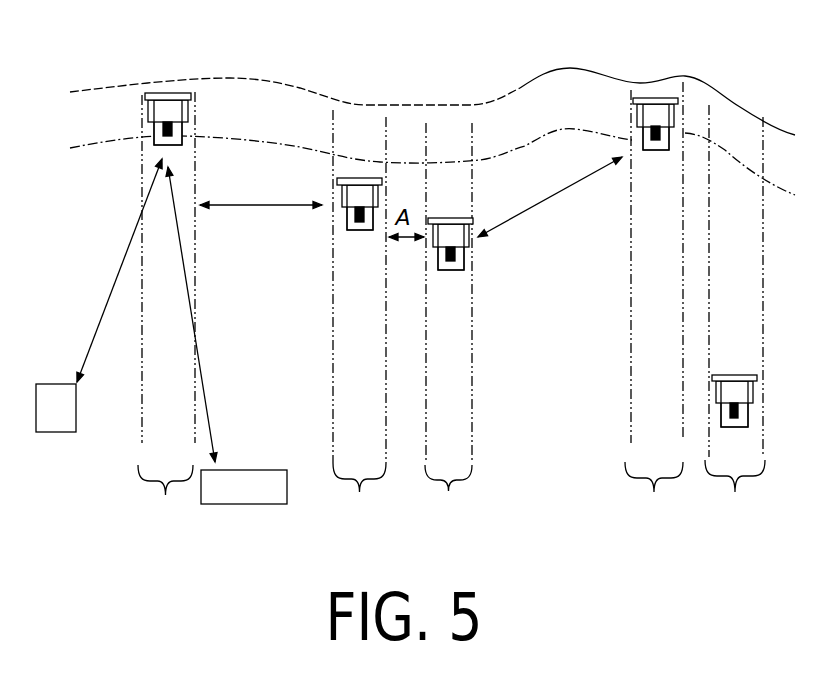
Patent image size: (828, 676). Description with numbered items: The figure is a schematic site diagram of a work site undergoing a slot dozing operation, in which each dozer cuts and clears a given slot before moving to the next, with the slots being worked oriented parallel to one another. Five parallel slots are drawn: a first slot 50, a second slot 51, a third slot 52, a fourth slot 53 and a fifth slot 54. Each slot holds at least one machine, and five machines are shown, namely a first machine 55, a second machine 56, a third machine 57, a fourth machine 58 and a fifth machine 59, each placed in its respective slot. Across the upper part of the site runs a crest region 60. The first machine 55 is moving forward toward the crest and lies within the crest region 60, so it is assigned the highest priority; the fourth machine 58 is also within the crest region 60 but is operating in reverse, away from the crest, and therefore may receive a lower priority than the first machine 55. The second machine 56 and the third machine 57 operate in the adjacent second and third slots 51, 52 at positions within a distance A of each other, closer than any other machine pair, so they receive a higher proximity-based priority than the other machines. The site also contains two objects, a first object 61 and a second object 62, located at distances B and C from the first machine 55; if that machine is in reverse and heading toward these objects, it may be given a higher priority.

The first slot 50 is at (166, 311).
The second slot 51 is at (359, 319).
The third slot 52 is at (448, 326).
The fourth slot 53 is at (654, 305).
The fifth slot 54 is at (735, 317).
The first machine 55 is at (143, 94).
The second machine 56 is at (360, 178).
The third machine 57 is at (453, 218).
The fourth machine 58 is at (650, 98).
The fifth machine 59 is at (735, 375).
The crest region 60 is at (273, 123).
The first object 61 is at (43, 419).
The second object 62 is at (227, 498).